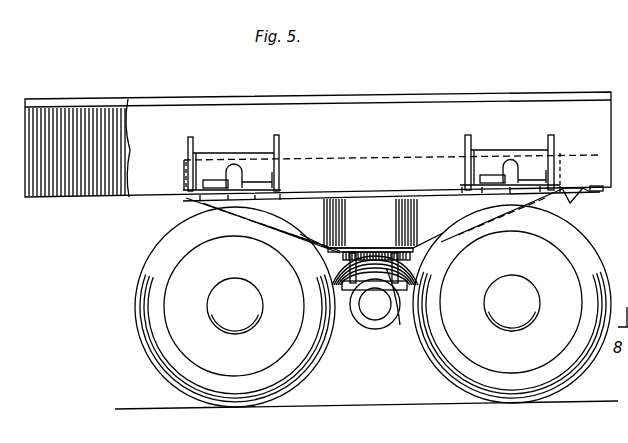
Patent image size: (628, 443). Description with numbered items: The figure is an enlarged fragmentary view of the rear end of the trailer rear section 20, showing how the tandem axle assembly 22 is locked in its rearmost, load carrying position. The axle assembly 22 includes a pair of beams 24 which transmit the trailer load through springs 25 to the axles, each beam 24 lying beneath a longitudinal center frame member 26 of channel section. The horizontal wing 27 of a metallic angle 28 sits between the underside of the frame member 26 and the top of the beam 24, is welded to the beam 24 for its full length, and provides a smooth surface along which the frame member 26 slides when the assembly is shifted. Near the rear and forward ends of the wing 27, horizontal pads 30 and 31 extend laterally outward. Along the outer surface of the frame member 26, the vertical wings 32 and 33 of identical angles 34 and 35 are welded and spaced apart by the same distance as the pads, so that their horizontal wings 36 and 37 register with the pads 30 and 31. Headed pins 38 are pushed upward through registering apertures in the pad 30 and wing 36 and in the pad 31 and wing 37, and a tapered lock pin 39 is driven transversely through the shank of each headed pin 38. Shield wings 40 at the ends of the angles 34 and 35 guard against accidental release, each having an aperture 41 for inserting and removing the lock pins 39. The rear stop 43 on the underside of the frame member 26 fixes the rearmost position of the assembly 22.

The trailer rear section 20 is at (168, 57).
The tandem axle assembly 22 is at (312, 378).
The beam 24 is at (378, 233).
The spring 25 is at (373, 301).
The longitudinal center frame member 26 is at (420, 139).
The horizontal wing 27 is at (368, 192).
The metallic angle 28 is at (316, 157).
The horizontal pad 30 is at (462, 186).
The horizontal pad 31 is at (282, 196).
The vertical wing 32 is at (518, 149).
The vertical wing 33 is at (244, 152).
The angle 34 is at (498, 138).
The angle 35 is at (214, 141).
The horizontal wing 36 is at (484, 192).
The horizontal wing 37 is at (263, 199).
The headed pin 38 is at (506, 174).
The tapered lock pin 39 is at (532, 178).
The shield wing 40 is at (189, 137).
The aperture 41 is at (562, 166).
The rear stop 43 is at (574, 196).